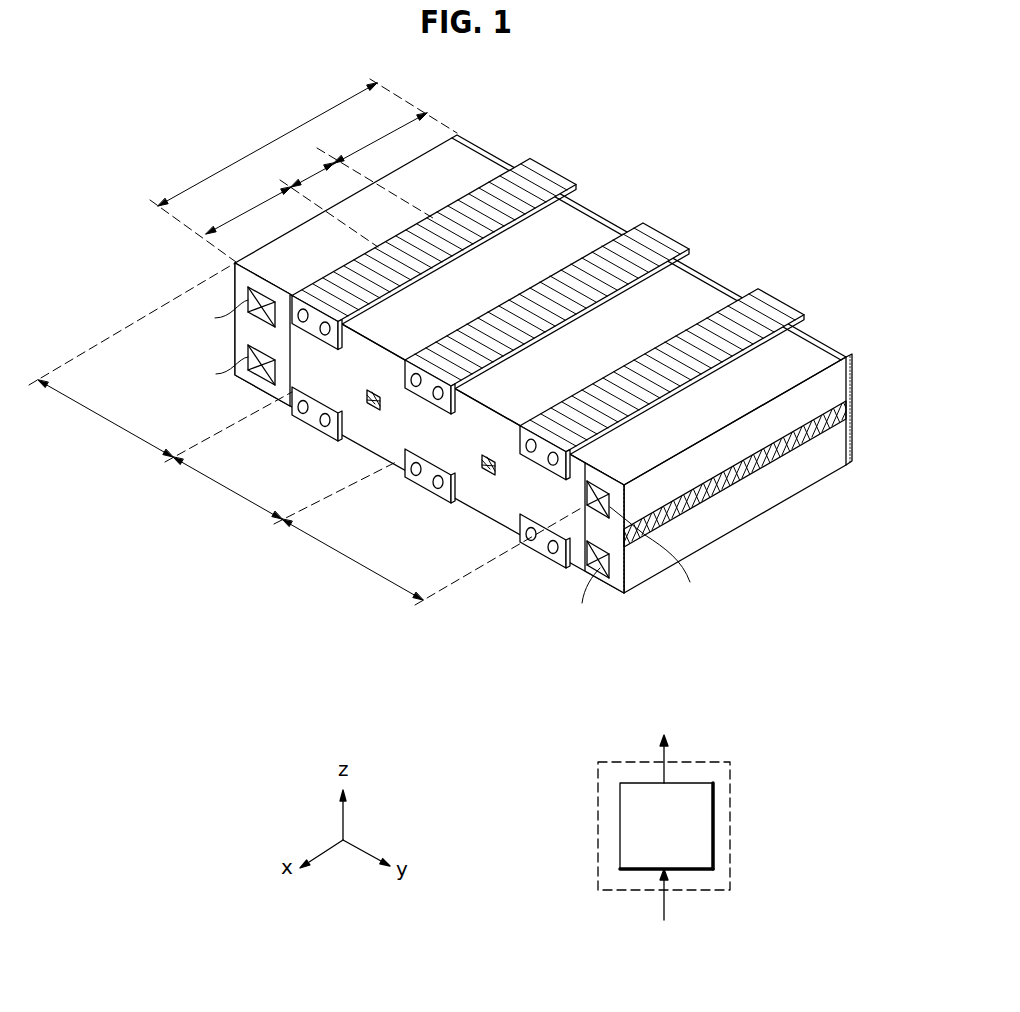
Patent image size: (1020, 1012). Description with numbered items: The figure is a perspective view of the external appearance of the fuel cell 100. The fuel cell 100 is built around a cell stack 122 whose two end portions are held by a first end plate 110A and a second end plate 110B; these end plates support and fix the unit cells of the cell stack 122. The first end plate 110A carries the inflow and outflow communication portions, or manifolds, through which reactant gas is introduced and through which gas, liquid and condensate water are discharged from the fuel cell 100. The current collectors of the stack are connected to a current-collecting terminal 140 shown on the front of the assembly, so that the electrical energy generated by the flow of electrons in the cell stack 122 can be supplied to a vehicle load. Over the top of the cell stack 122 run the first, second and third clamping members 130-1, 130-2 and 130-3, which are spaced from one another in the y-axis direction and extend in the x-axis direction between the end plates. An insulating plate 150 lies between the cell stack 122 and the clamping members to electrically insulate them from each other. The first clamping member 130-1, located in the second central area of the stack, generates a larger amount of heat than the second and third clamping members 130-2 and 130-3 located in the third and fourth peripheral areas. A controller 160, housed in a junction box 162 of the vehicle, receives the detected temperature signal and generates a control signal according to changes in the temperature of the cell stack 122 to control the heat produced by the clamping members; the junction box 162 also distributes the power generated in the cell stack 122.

The fuel cell 100 is at (832, 85).
The first end plate 110A is at (363, 432).
The second end plate 110B is at (852, 400).
The cell stack 122 is at (707, 527).
The first clamping member 130-1 is at (666, 240).
The second clamping member 130-2 is at (552, 172).
The third clamping member 130-3 is at (768, 302).
The current-collecting terminal 140 is at (490, 476).
The insulating plate 150 is at (792, 360).
The controller 160 is at (713, 822).
The junction box 162 is at (624, 893).